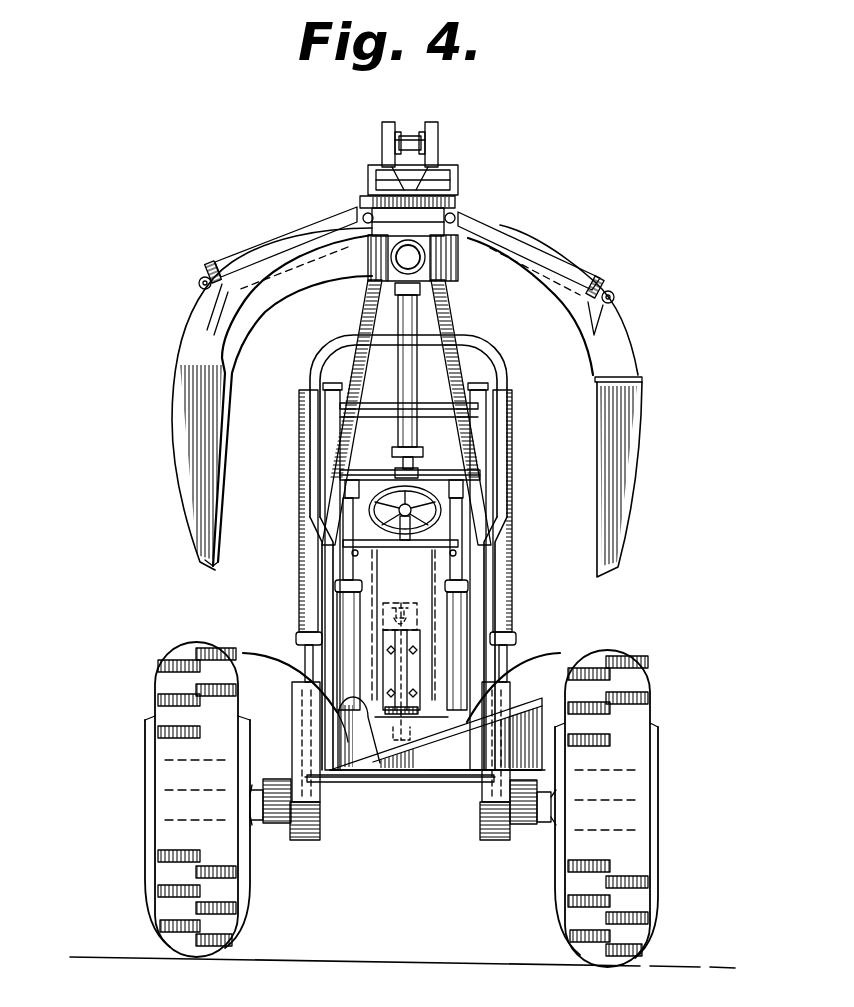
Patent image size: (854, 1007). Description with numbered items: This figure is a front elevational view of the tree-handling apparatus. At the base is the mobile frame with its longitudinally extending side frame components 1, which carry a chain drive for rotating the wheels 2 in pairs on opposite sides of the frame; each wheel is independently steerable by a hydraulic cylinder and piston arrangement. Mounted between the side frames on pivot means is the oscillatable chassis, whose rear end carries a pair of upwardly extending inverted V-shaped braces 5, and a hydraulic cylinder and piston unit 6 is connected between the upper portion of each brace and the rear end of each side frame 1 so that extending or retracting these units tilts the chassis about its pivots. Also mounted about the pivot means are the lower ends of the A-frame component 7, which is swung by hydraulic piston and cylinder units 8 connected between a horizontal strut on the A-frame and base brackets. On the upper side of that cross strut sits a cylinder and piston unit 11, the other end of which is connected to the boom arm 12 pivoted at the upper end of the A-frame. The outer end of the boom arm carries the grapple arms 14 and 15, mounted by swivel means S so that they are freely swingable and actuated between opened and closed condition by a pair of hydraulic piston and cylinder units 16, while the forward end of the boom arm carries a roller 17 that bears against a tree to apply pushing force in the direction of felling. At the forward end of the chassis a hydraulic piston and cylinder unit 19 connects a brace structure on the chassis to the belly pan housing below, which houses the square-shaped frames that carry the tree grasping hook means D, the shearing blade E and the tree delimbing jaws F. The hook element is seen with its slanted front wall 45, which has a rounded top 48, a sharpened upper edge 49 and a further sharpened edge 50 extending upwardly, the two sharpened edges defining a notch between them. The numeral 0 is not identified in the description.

The side frame component 1 is at (306, 838).
The wheel 2 is at (165, 775).
The inverted V-shaped brace 5 is at (334, 390).
The hydraulic cylinder and piston unit 6 is at (303, 563).
The A-frame component 7 is at (364, 316).
The hydraulic piston and cylinder unit 8 is at (347, 617).
The steering wheel 0 is at (427, 503).
The cylinder and piston unit 11 is at (428, 318).
The boom arm 12 is at (384, 128).
The grapple arm 14 is at (180, 442).
The grapple arm 15 is at (633, 470).
The hydraulic piston and cylinder unit 16 is at (322, 228).
The roller 17 is at (440, 173).
The hydraulic piston and cylinder unit 19 is at (418, 636).
The front wall 45 is at (540, 700).
The rounded top 48 is at (520, 704).
The sharpened upper edge 49 is at (441, 760).
The sharpened edge 50 is at (380, 748).
The swivel means S is at (406, 762).
The hook means D is at (480, 752).
The shearing blade E is at (328, 773).
The tree delimbing jaws F is at (250, 647).